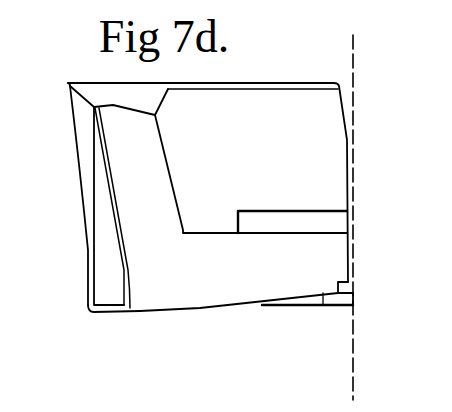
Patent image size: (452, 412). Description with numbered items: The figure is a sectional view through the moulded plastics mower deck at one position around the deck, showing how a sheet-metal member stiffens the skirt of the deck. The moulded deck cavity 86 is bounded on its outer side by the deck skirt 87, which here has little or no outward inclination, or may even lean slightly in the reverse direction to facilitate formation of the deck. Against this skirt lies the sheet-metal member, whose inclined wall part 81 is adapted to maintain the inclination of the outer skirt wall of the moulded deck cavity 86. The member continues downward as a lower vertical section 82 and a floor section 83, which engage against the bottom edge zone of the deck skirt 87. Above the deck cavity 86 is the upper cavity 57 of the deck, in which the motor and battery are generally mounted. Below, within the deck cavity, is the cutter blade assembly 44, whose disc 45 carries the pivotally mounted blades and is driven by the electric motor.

The cutter blade assembly 44 is at (261, 310).
The disc 45 is at (323, 305).
The upper cavity 57 is at (245, 118).
The inclined wall part 81 is at (140, 213).
The lower vertical section 82 is at (128, 293).
The floor section 83 is at (113, 312).
The moulded deck cavity 86 is at (135, 183).
The deck skirt 87 is at (113, 277).